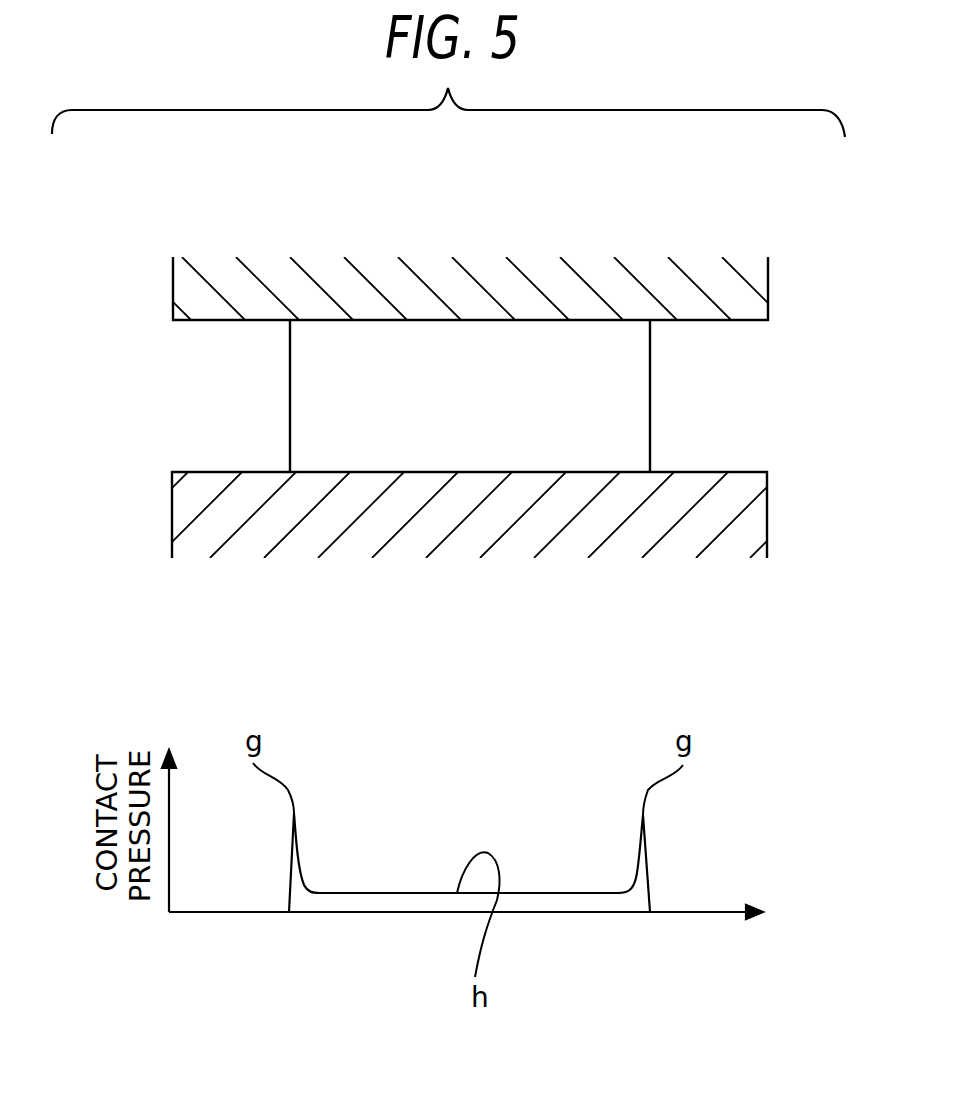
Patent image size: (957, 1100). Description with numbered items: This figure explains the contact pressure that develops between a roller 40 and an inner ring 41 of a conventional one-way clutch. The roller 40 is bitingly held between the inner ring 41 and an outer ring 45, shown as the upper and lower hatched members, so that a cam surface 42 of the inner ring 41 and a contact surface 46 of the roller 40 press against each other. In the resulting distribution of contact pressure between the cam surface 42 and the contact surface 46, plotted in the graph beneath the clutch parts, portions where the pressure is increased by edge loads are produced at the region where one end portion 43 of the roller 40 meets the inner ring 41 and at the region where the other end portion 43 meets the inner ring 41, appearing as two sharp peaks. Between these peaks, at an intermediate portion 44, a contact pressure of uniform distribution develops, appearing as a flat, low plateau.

The roller 40 is at (290, 380).
The inner ring 41 is at (211, 472).
The cam surface 42 is at (420, 472).
The end portion 43 is at (299, 472).
The intermediate portion 44 is at (477, 472).
The outer ring 45 is at (250, 320).
The contact surface 46 is at (537, 472).